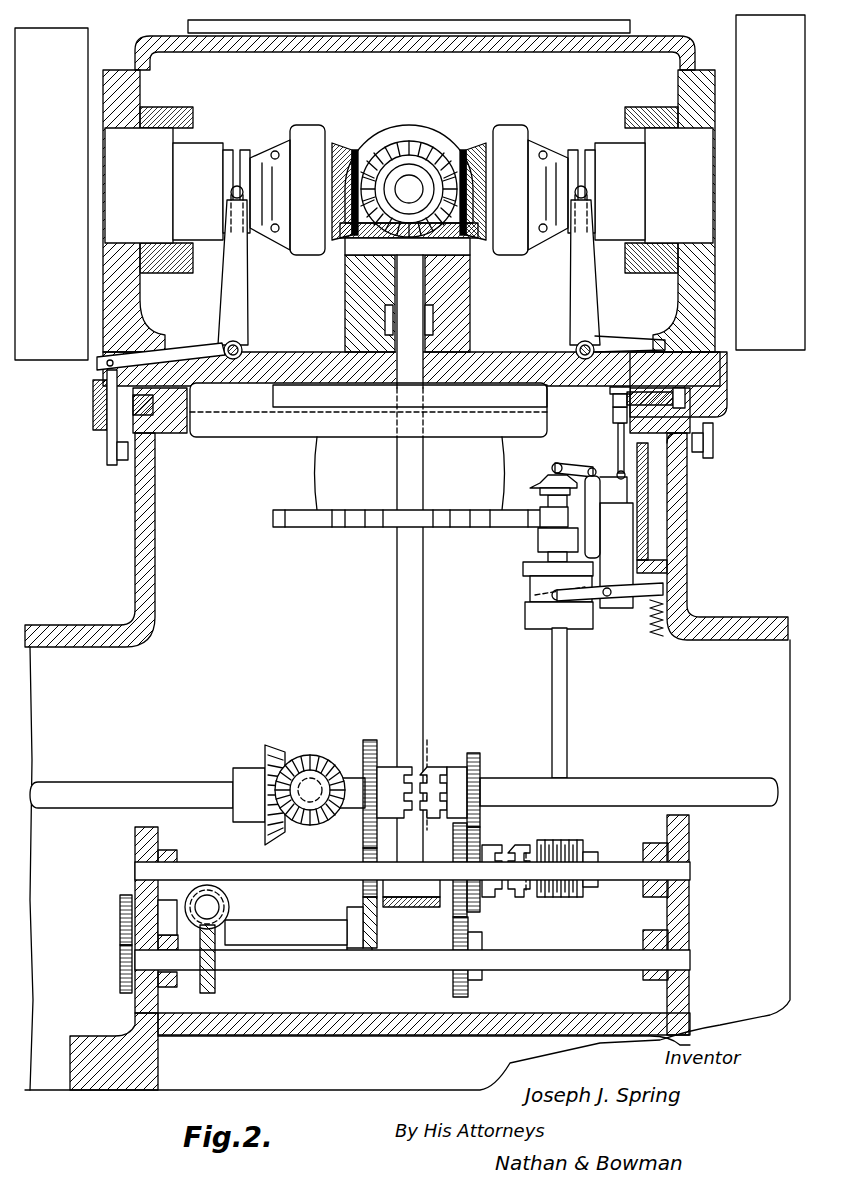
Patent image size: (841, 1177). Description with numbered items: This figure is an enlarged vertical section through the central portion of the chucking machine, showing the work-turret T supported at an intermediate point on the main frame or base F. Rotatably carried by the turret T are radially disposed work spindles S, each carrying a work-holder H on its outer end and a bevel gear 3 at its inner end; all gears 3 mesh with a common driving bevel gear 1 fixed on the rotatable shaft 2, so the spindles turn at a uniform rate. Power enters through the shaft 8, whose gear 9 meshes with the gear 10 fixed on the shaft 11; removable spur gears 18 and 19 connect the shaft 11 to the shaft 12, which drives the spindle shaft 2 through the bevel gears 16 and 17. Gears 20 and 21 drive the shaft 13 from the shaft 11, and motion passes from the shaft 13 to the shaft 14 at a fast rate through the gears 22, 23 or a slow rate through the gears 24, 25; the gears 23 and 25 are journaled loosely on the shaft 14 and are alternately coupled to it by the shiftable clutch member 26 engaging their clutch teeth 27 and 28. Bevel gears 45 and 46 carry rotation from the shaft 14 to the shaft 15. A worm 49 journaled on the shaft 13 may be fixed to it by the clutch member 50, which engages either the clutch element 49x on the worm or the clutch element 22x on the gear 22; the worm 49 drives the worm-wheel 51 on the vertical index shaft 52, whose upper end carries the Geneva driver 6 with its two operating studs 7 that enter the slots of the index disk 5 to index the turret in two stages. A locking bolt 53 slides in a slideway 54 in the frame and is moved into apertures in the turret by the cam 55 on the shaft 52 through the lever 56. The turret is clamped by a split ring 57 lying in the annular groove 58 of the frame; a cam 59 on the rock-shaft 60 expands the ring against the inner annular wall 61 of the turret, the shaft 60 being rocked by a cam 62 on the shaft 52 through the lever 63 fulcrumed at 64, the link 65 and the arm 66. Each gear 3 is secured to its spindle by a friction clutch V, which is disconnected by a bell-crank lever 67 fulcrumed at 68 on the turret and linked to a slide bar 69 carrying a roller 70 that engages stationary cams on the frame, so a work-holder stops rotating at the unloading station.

The bevel gear 1 is at (362, 240).
The rotatable shaft 2 is at (420, 636).
The gear 3 is at (342, 147).
The index disk 5 is at (312, 527).
The driver 6 is at (580, 535).
The operating studs 7 is at (571, 517).
The shaft 8 is at (212, 905).
The gear 9 is at (230, 912).
The gear 10 is at (215, 987).
The shaft 11 is at (298, 966).
The shaft 12 is at (317, 915).
The shaft 13 is at (617, 882).
The shaft 14 is at (148, 790).
The shaft 15 is at (322, 783).
The bevel gear 16 is at (377, 927).
The bevel gear 17 is at (425, 908).
The spur gear 18 is at (118, 902).
The spur gear 19 is at (118, 944).
The gear 20 is at (452, 981).
The gear 21 is at (455, 836).
The gear 22 is at (481, 838).
The clutch element 22x is at (486, 892).
The gear 23 is at (481, 762).
The gear 24 is at (363, 854).
The gear 25 is at (378, 748).
The shiftable clutch member 26 is at (430, 768).
The clutch teeth 27 is at (434, 777).
The clutch teeth 28 is at (395, 805).
The bevel gear 45 is at (270, 745).
The bevel gear 46 is at (310, 752).
The worm 49 is at (568, 897).
The clutch element 49x is at (530, 898).
The clutch member 50 is at (518, 850).
The worm-wheel 51 is at (595, 852).
The vertically disposed shaft 52 is at (567, 762).
The bolt 53 is at (658, 525).
The slideway 54 is at (672, 493).
The cam 55 is at (527, 608).
The lever 56 is at (621, 596).
The split ring 57 is at (153, 400).
The annular groove 58 is at (153, 412).
The cam 59 is at (700, 402).
The rock-shaft 60 is at (612, 390).
The inner annular wall 61 is at (105, 410).
The cam 62 is at (542, 480).
The lever 63 is at (571, 466).
The fulcrum 64 is at (604, 460).
The link 65 is at (618, 442).
The arm 66 is at (613, 410).
The bell-crank lever 67 is at (230, 311).
The fulcrum 68 is at (245, 352).
The slide bar 69 is at (107, 448).
The stud or roller 70 is at (123, 462).
The work-holder H is at (410, 187).
The clutch V is at (307, 138).
The work spindle S is at (210, 175).
The work-turret T is at (722, 388).
The main frame F is at (72, 625).